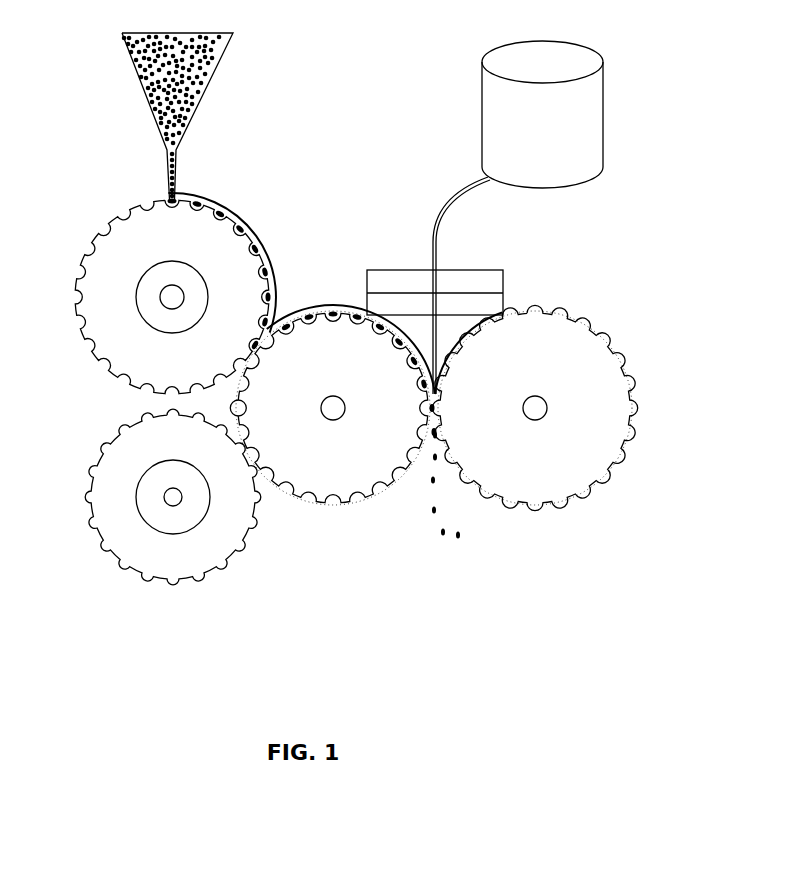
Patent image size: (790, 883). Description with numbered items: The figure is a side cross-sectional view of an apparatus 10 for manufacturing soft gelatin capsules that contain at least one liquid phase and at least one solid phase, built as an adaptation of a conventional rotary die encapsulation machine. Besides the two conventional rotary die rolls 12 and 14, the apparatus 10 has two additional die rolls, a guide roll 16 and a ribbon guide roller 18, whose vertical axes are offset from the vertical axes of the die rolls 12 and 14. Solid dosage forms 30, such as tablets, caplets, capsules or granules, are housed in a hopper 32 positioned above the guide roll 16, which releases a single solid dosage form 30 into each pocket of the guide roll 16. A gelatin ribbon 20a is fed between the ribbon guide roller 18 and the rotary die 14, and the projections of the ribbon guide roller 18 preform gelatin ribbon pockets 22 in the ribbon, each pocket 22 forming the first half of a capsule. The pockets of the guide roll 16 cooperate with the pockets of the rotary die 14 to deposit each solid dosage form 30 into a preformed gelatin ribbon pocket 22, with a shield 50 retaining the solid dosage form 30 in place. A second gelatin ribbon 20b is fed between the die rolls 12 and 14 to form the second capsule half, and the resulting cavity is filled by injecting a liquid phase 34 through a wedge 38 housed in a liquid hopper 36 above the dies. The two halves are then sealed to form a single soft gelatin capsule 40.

The apparatus 10 is at (371, 330).
The die roll 12 is at (555, 397).
The die roll 14 is at (267, 405).
The guide roll 16 is at (176, 282).
The ribbon guide roller 18 is at (173, 518).
The gelatin ribbon 20a is at (143, 587).
The second gelatin ribbon 20b is at (607, 328).
The gelatin ribbon pocket 22 is at (233, 413).
The solid dosage form 30 is at (187, 95).
The hopper 32 is at (125, 38).
The liquid phase 34 is at (453, 285).
The liquid hopper 36 is at (569, 114).
The wedge 38 is at (505, 285).
The soft gelatin capsule 40 is at (425, 491).
The shield 50 is at (223, 213).